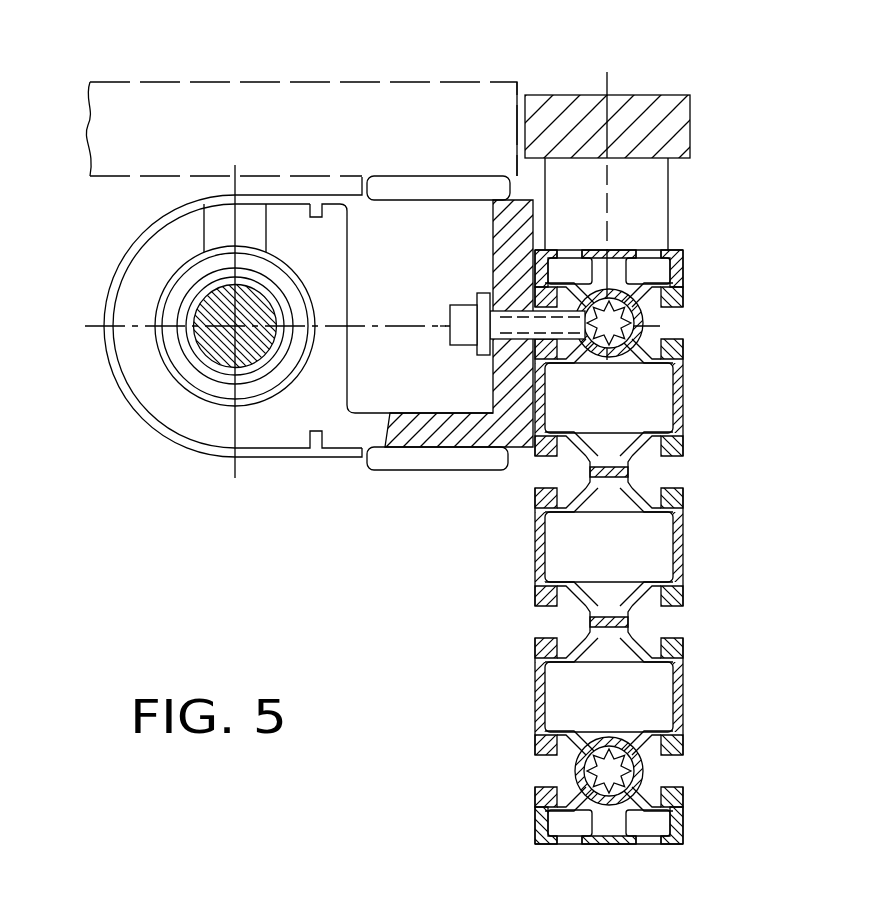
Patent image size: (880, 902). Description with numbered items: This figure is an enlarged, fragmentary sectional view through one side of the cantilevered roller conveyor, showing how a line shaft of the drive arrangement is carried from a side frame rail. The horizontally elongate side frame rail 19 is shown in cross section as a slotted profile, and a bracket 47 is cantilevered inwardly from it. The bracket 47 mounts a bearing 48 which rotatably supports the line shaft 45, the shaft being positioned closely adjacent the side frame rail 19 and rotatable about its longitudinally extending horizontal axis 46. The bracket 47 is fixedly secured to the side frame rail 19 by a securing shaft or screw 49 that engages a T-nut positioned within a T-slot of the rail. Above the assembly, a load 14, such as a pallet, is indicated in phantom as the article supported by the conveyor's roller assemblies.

The load 14 is at (432, 90).
The side frame rail 19 is at (683, 447).
The line shaft 45 is at (210, 345).
The longitudinally extending axis 46 is at (242, 317).
The bracket 47 is at (200, 418).
The bearing 48 is at (205, 288).
The securing screw 49 is at (500, 322).